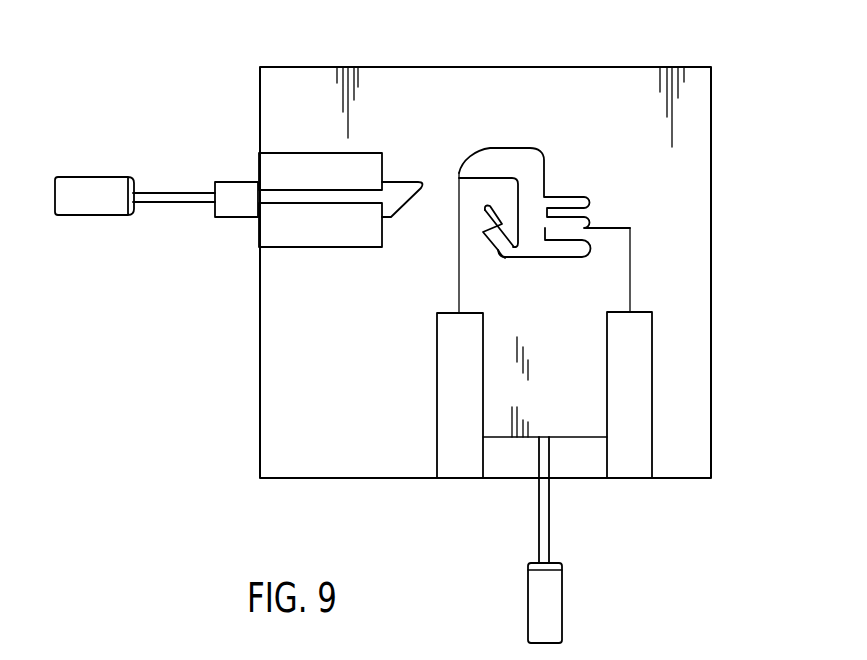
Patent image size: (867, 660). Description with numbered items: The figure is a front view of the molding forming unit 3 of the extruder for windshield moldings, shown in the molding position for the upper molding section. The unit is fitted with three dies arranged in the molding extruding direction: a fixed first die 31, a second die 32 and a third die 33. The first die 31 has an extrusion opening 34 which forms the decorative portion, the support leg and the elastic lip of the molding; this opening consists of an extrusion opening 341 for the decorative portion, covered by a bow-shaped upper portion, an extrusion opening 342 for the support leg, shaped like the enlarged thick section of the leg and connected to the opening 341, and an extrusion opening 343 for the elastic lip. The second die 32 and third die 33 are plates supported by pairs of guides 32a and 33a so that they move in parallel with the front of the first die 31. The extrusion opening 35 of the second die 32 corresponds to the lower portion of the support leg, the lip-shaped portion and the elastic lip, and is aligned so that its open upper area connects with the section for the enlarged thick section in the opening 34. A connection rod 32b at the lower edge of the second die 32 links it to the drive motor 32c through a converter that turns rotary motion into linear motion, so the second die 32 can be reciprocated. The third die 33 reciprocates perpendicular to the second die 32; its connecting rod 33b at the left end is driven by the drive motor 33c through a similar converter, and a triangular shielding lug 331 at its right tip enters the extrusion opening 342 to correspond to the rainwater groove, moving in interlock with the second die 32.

The molding forming unit 3 is at (645, 56).
The first die 31 is at (667, 263).
The second die 32 is at (530, 408).
The guides 32a is at (455, 423).
The connection rod 32b is at (541, 529).
The drive motor 32c is at (550, 607).
The third die 33 is at (256, 198).
The guides 33a is at (318, 158).
The connecting rod 33b is at (168, 203).
The drive motor 33c is at (87, 198).
The shielding lug 331 is at (408, 196).
The extrusion opening 34 is at (569, 175).
The extrusion opening for the decorative portion 341 is at (490, 165).
The extrusion opening for the support leg 342 is at (537, 195).
The extrusion opening for the elastic lip 343 is at (580, 205).
The extrusion opening 35 is at (501, 240).